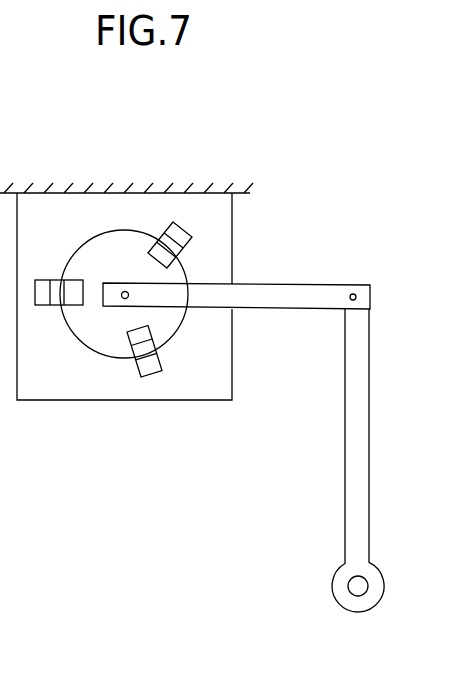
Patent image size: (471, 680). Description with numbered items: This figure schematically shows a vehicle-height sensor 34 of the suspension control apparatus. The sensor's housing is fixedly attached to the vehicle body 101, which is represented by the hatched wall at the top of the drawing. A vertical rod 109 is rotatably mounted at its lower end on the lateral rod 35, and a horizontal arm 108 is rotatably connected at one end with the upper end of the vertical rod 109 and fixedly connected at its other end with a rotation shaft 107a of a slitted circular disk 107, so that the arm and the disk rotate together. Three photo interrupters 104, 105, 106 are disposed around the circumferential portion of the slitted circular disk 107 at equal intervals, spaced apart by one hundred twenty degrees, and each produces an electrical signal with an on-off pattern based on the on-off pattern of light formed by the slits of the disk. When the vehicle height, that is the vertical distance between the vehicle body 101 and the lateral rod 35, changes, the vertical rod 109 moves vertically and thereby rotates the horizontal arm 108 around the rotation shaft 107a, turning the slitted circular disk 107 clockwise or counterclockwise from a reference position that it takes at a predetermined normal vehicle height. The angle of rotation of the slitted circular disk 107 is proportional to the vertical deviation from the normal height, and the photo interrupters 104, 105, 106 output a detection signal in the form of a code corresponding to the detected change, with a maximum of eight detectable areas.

The vehicle body 101 is at (128, 146).
The vehicle-height sensor 34 is at (102, 400).
The lateral rod 35 is at (357, 585).
The photo interrupter 104 is at (47, 305).
The photo interrupter 105 is at (148, 372).
The photo interrupter 106 is at (180, 225).
The slitted circular disk 107 is at (85, 347).
The rotation shaft 107a is at (124, 291).
The horizontal arm 108 is at (297, 283).
The vertical rod 109 is at (367, 450).